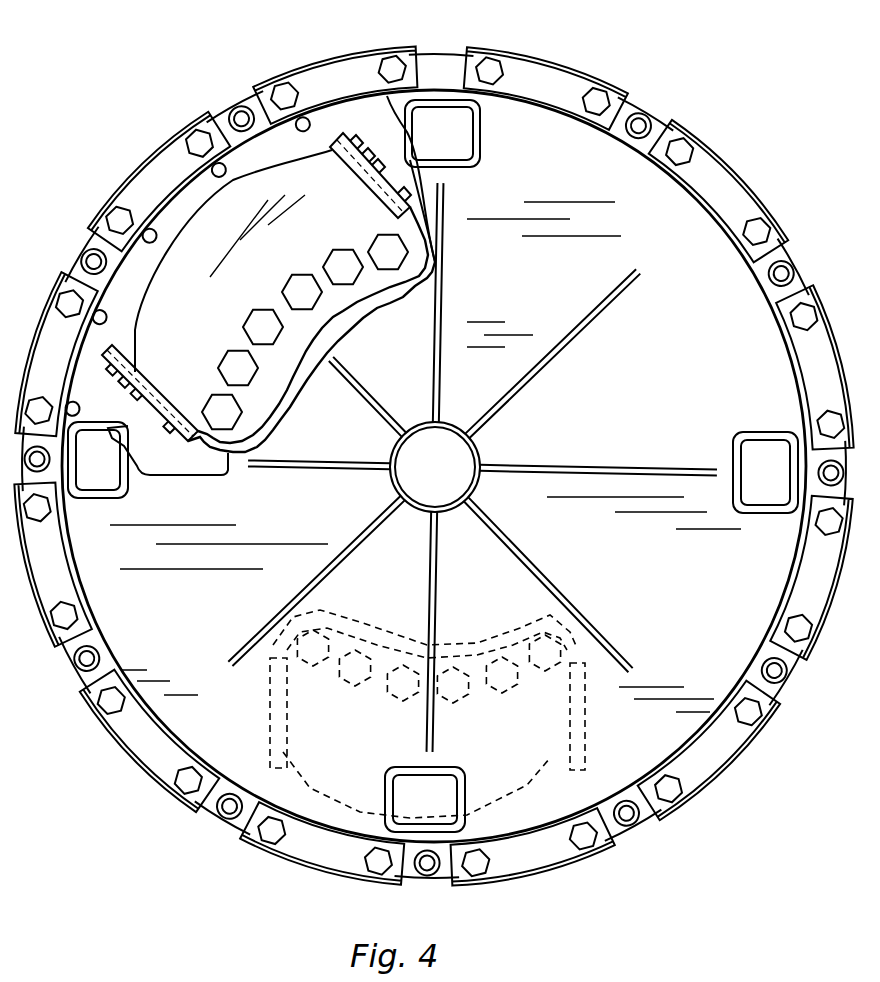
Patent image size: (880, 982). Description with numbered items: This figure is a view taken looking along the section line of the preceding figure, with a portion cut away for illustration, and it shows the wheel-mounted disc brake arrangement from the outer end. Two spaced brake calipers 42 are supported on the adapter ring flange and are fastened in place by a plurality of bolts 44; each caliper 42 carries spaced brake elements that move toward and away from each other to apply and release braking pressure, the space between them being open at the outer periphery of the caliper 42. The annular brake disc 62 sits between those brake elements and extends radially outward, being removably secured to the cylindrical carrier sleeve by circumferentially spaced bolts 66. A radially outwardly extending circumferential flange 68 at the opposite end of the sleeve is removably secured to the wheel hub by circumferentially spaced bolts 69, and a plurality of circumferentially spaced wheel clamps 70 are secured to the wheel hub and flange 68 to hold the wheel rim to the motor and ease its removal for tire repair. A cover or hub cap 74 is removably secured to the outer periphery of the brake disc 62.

The brake caliper 42 is at (201, 383).
The bolts 44 is at (383, 244).
The annular brake disc 62 is at (360, 122).
The bolts 66 is at (309, 116).
The circumferential flange 68 is at (99, 239).
The bolts 69 is at (237, 108).
The wheel clamps 70 is at (543, 72).
The cover or hub cap 74 is at (652, 398).